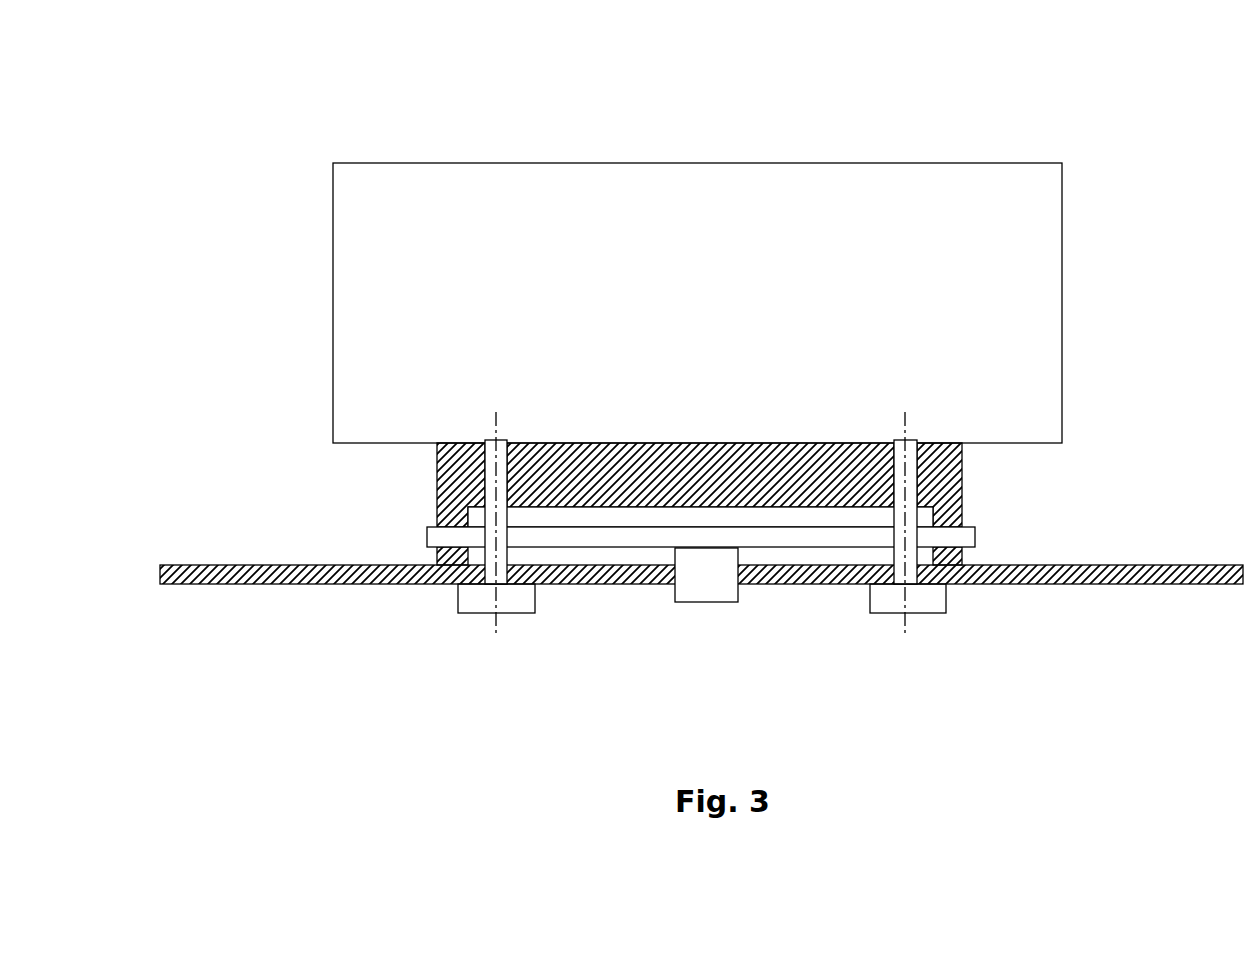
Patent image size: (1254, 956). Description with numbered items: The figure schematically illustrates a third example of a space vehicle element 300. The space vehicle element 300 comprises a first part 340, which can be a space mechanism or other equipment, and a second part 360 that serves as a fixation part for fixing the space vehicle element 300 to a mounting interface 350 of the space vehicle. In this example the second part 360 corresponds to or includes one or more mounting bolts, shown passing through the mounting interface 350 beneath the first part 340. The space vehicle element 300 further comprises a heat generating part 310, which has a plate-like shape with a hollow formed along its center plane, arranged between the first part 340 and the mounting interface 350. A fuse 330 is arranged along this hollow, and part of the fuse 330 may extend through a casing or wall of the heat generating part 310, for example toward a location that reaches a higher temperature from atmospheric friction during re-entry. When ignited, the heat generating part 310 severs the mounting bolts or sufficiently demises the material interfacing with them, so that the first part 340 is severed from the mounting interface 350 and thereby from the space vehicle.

The space vehicle element 300 is at (356, 110).
The heat generating part 310 is at (878, 556).
The fuse 330 is at (433, 532).
The first part 340 is at (1037, 241).
The mounting interface 350 is at (822, 463).
The second part 360 is at (478, 599).